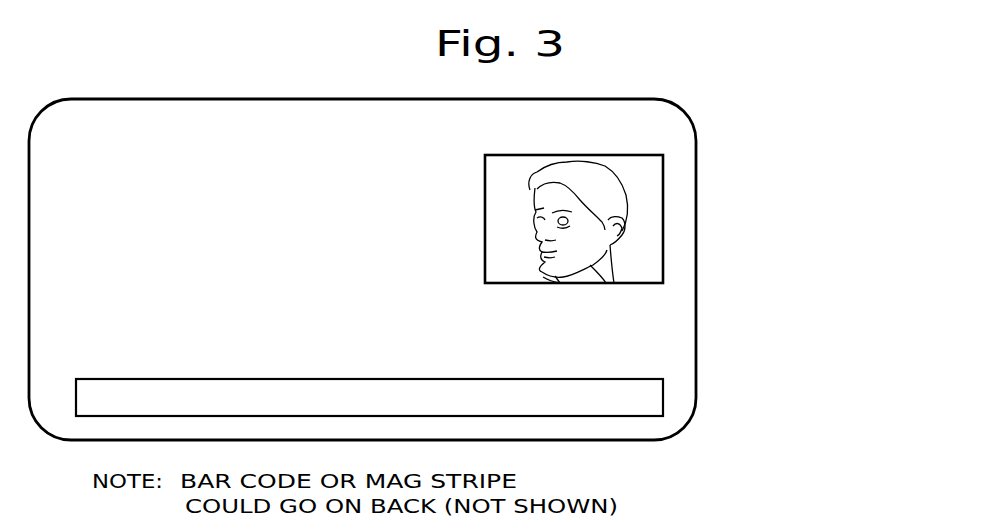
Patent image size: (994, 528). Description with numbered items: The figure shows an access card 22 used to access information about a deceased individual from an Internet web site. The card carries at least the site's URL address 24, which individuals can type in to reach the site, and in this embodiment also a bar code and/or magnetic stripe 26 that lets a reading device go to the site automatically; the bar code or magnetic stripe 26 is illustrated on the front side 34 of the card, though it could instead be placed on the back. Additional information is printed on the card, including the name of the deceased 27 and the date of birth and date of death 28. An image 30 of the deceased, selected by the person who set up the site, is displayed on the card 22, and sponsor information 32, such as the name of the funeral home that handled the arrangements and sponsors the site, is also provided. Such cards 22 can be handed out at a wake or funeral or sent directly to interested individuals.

The access card 22 is at (448, 269).
The URL address 24 is at (497, 322).
The bar code and/or magnetic stripe 26 is at (648, 417).
The name of the deceased 27 is at (333, 231).
The date of birth and date of death 28 is at (302, 276).
The image of the deceased 30 is at (663, 258).
The sponsor information 32 is at (256, 109).
The front side 34 is at (729, 353).